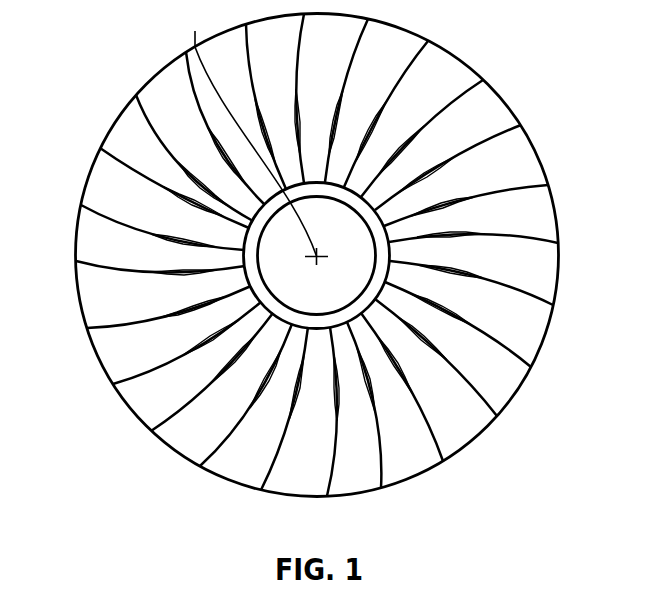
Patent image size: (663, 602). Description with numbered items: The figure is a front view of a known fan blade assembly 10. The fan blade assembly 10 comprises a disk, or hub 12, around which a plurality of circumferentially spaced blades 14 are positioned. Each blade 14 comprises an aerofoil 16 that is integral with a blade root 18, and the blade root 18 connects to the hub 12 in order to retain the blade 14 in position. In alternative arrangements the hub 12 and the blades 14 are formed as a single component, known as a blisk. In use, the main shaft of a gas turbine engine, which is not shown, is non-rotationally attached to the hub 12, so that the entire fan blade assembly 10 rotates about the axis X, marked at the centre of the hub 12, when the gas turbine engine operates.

The fan blade assembly 10 is at (315, 253).
The hub 12 is at (386, 261).
The blade 14 is at (500, 385).
The aerofoil 16 is at (92, 295).
The blade root 18 is at (249, 229).